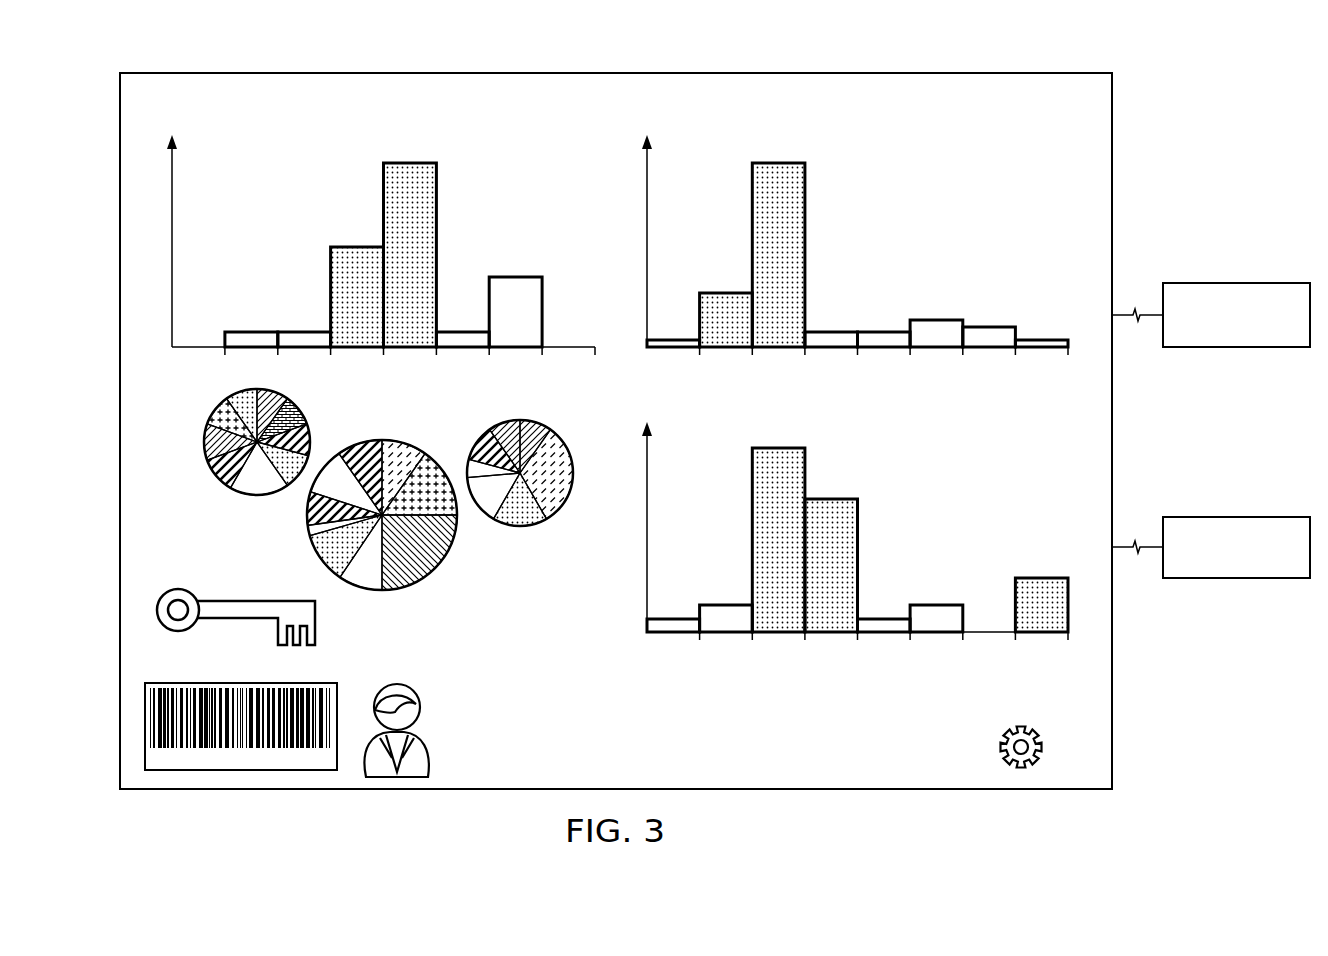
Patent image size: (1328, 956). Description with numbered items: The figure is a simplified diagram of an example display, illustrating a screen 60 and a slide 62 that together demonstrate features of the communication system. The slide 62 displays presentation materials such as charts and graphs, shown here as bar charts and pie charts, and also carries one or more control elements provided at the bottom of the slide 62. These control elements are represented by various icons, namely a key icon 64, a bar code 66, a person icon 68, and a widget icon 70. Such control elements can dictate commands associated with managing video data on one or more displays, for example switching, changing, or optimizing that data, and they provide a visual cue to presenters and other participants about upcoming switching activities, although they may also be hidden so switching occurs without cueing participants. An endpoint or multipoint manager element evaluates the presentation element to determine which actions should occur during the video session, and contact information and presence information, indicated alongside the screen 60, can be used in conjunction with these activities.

The screen 60 is at (1166, 105).
The slide 62 is at (357, 66).
The key icon 64 is at (238, 600).
The bar code 66 is at (240, 683).
The person icon 68 is at (430, 758).
The widget icon 70 is at (1042, 750).